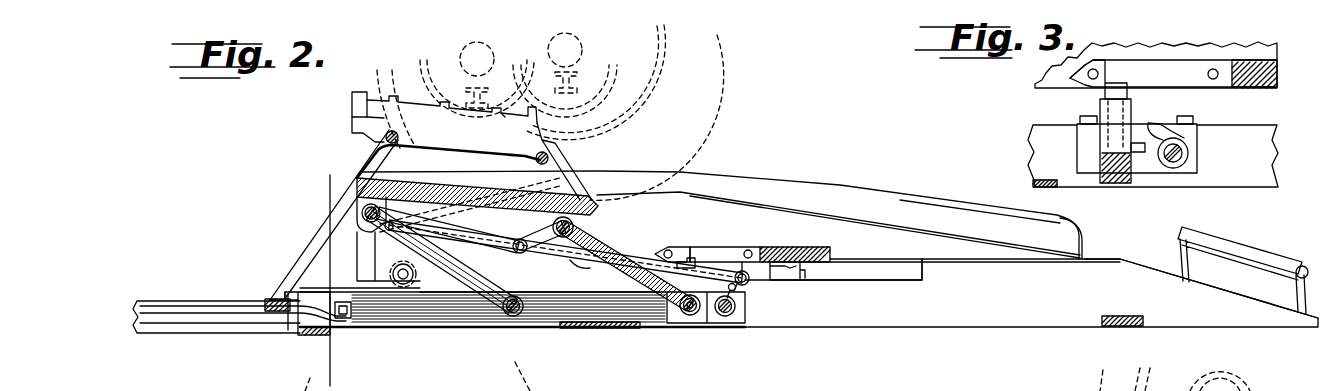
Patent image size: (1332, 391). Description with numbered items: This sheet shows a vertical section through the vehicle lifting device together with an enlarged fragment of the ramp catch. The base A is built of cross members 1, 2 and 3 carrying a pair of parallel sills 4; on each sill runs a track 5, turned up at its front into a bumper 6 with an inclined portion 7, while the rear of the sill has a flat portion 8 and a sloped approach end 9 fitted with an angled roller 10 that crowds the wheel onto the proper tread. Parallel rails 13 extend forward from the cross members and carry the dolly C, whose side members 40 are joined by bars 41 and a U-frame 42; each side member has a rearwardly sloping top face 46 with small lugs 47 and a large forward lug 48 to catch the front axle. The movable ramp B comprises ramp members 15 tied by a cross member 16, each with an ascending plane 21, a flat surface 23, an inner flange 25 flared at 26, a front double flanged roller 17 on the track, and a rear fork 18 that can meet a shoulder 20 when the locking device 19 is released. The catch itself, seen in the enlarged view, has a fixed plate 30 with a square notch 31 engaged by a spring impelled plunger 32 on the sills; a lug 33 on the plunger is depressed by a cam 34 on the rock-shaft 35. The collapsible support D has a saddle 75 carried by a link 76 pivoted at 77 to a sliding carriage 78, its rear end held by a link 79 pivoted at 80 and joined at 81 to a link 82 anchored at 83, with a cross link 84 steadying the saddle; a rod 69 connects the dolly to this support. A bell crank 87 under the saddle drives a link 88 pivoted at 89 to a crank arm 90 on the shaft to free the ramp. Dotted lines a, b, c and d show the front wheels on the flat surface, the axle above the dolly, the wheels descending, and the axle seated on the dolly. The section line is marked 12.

In FIG. 2, the cross member 1 is at (312, 335).
In FIG. 2, the cross member 2 is at (600, 327).
In FIG. 3, the cross member 2 is at (1035, 183).
In FIG. 2, the cross member 3 is at (1117, 316).
In FIG. 2, the sill 4 is at (925, 318).
In FIG. 3, the sill 4 is at (1035, 145).
In FIG. 2, the track 5 is at (880, 282).
In FIG. 2, the bumper 6 is at (308, 262).
In FIG. 2, the inclined forward end portion of the track 7 is at (349, 282).
In FIG. 2, the flat portion 8 is at (1098, 259).
In FIG. 2, the sloped approach end 9 is at (1137, 264).
In FIG. 2, the roller 10 is at (1232, 250).
In FIG. 2, the section line 12 is at (320, 186).
In FIG. 2, the rail 13 is at (183, 325).
In FIG. 2, the ramp member 15 is at (765, 210).
In FIG. 3, the ramp member 15 is at (1045, 73).
In FIG. 2, the cross member 16 is at (790, 248).
In FIG. 3, the cross member 16 is at (1255, 88).
In FIG. 2, the double flanged roller 17 is at (386, 266).
In FIG. 2, the fork 18 is at (804, 278).
In FIG. 2, the locking device 19 is at (695, 237).
In FIG. 2, the shoulder 20 is at (923, 268).
In FIG. 2, the ascending plane 21 is at (913, 232).
In FIG. 2, the horizontal flat surface 23 is at (683, 195).
In FIG. 2, the inner flange 25 is at (866, 204).
In FIG. 2, the flared end of flange 26 is at (1062, 232).
In FIG. 3, the fixed plate 30 is at (1175, 60).
In FIG. 3, the square notch 31 is at (1114, 83).
In FIG. 2, the spring impelled plunger 32 is at (680, 250).
In FIG. 3, the spring impelled plunger 32 is at (1100, 90).
In FIG. 3, the lug 33 is at (1142, 152).
In FIG. 3, the cam 34 is at (1160, 124).
In FIG. 2, the rock-shaft 35 is at (735, 307).
In FIG. 3, the rock-shaft 35 is at (1188, 153).
In FIG. 2, the side member 40 is at (300, 268).
In FIG. 2, the bar 41 is at (384, 138).
In FIG. 2, the U-frame 42 is at (275, 300).
In FIG. 2, the top face 46 is at (406, 103).
In FIG. 2, the small upstanding lug 47 is at (503, 113).
In FIG. 2, the large upstanding lug 48 is at (352, 100).
In FIG. 2, the rod 69 is at (166, 304).
In FIG. 2, the saddle 75 is at (420, 188).
In FIG. 2, the link 76 is at (475, 290).
In FIG. 2, the pivot 77 is at (513, 316).
In FIG. 2, the sliding carriage 78 is at (551, 313).
In FIG. 2, the link 79 is at (683, 313).
In FIG. 2, the pivot 80 is at (692, 313).
In FIG. 2, the pivot 81 is at (585, 228).
In FIG. 2, the link 82 is at (446, 300).
In FIG. 2, the pivot 83 is at (418, 300).
In FIG. 2, the cross link 84 is at (478, 200).
In FIG. 2, the bell crank 87 is at (505, 244).
In FIG. 2, the link 88 is at (600, 252).
In FIG. 2, the pivot 89 is at (742, 262).
In FIG. 2, the crank arm 90 is at (742, 290).
In FIG. 2, the dotted-line wheel position a is at (713, 94).
In FIG. 2, the front axle position b is at (577, 90).
In FIG. 2, the wheel position on descending plane c is at (335, 113).
In FIG. 2, the seated axle position d is at (487, 90).
In FIG. 2, the base A is at (1008, 332).
In FIG. 2, the movable ramp B is at (836, 170).
In FIG. 2, the movable dolly C is at (373, 81).
In FIG. 2, the collapsible support D is at (593, 199).